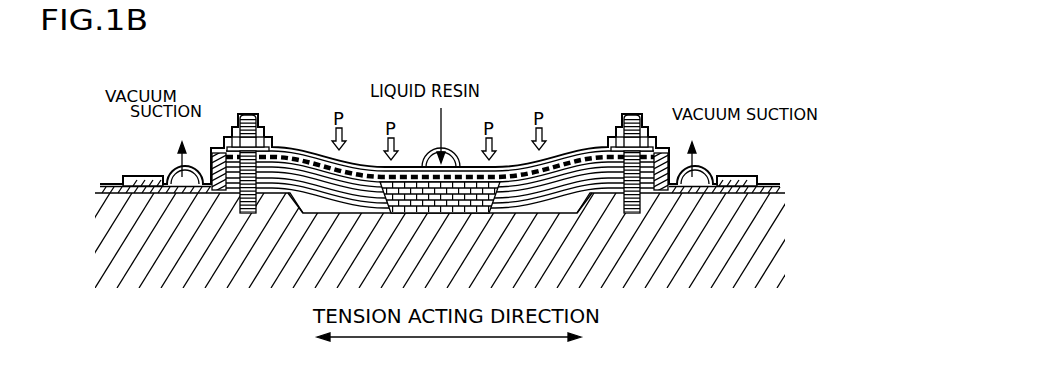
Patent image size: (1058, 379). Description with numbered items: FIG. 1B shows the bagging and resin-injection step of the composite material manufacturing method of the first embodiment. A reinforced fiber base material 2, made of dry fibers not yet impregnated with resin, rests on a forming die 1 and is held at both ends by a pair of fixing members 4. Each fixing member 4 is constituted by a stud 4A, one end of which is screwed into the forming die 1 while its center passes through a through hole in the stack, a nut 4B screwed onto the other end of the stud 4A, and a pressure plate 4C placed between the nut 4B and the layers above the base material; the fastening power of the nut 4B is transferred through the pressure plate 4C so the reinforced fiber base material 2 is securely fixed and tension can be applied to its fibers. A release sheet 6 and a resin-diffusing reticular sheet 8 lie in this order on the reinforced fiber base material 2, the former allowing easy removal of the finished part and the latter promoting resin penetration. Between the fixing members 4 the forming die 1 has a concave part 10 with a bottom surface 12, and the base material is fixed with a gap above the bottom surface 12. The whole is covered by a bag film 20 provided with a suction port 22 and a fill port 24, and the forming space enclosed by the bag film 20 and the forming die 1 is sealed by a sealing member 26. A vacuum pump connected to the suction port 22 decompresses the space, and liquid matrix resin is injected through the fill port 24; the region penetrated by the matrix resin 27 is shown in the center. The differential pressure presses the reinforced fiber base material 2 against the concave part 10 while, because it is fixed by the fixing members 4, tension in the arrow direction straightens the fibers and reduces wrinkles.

The forming die 1 is at (768, 242).
The reinforced fiber base material 2 is at (288, 170).
The fixing member 4 is at (641, 106).
The stud 4A is at (252, 116).
The nut 4B is at (233, 137).
The pressure plate 4C is at (227, 147).
The release sheet 6 is at (601, 148).
The resin-diffusing reticular sheet 8 is at (573, 156).
The concave part 10 is at (300, 208).
The bottom surface 12 is at (538, 194).
The bag film 20 is at (558, 153).
The suction port 22 is at (167, 176).
The fill port 24 is at (463, 160).
The sealing member 26 is at (124, 178).
The region penetrated by the matrix resin 27 is at (378, 197).